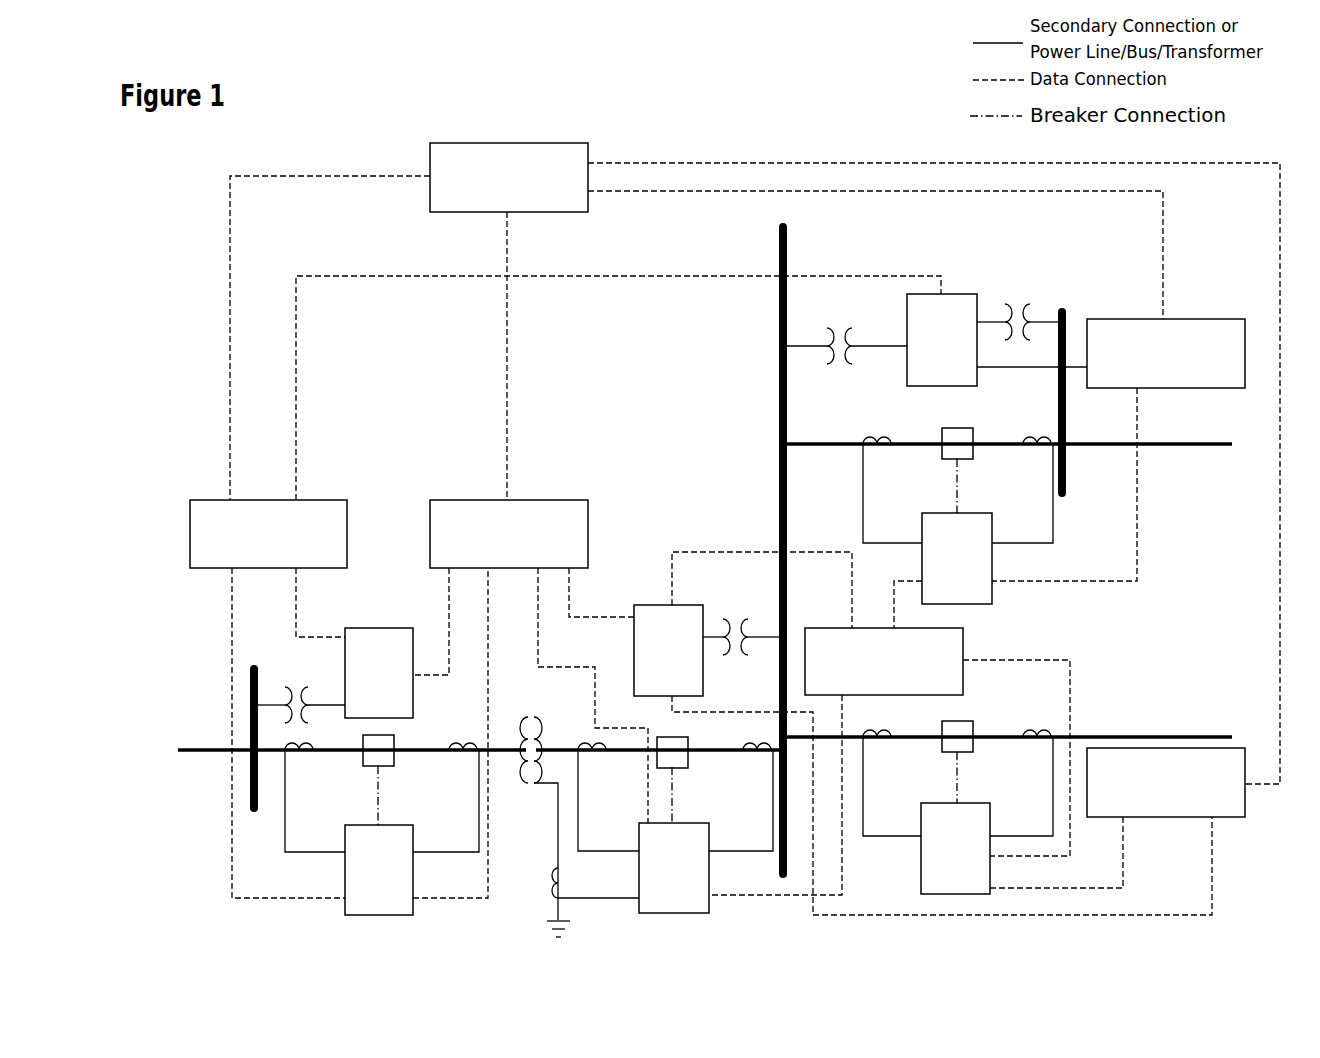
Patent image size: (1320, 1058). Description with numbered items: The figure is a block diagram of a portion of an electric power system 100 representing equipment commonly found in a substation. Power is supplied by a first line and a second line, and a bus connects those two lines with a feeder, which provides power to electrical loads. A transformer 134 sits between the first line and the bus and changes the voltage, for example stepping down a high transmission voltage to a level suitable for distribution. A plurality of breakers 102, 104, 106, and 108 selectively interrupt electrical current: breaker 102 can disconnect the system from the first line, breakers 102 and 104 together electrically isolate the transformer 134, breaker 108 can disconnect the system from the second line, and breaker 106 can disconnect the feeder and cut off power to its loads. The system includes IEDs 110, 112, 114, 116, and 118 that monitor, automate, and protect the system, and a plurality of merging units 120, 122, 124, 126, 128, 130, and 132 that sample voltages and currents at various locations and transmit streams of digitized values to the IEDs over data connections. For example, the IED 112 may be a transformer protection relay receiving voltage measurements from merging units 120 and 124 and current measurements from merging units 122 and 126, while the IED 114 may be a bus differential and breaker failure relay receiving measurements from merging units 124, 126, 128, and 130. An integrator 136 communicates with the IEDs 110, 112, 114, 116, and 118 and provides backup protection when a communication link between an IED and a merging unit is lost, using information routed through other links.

The electric power system 100 is at (371, 148).
The breaker 102 is at (395, 766).
The breaker 104 is at (689, 767).
The breaker 106 is at (974, 752).
The breaker 108 is at (974, 459).
The IED 110 is at (285, 558).
The IED 112 is at (526, 558).
The IED 114 is at (901, 686).
The IED 116 is at (1183, 806).
The IED 118 is at (1183, 377).
The merging unit 120 is at (396, 696).
The merging unit 122 is at (396, 893).
The merging unit 124 is at (685, 673).
The merging unit 126 is at (691, 891).
The merging unit 128 is at (972, 871).
The merging unit 130 is at (974, 581).
The merging unit 132 is at (959, 362).
The transformer 134 is at (530, 713).
The integrator 136 is at (526, 200).